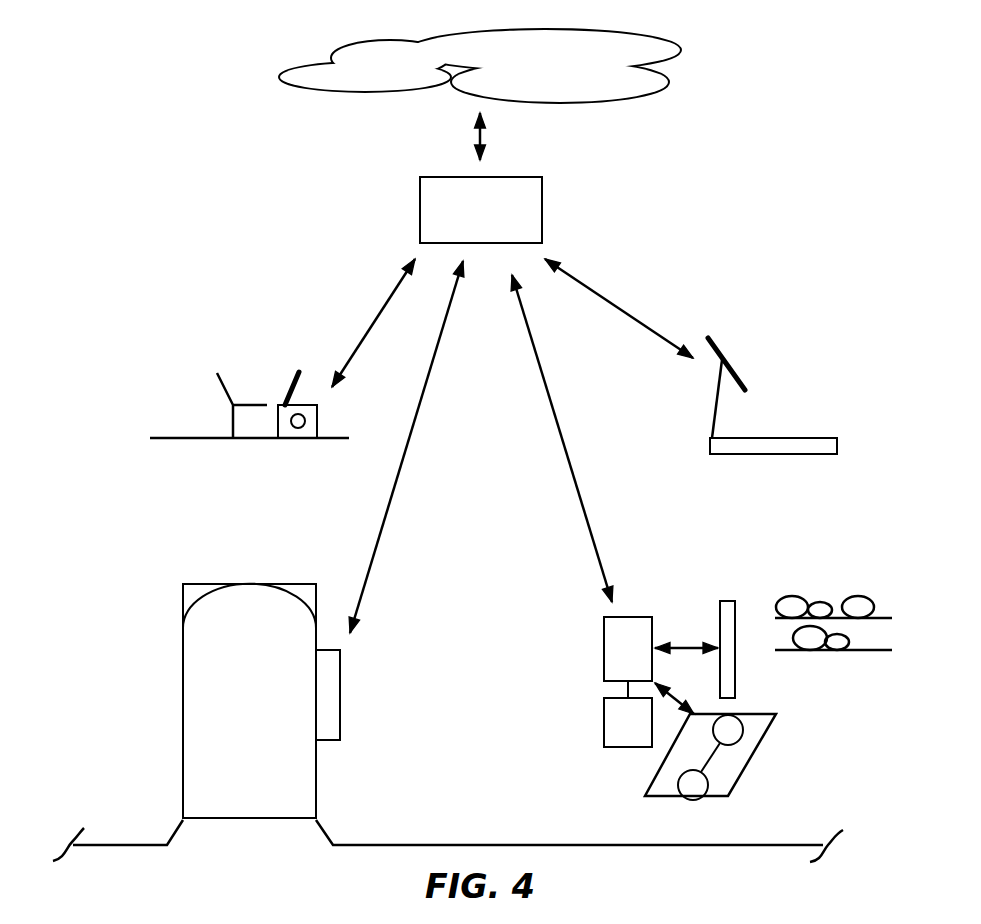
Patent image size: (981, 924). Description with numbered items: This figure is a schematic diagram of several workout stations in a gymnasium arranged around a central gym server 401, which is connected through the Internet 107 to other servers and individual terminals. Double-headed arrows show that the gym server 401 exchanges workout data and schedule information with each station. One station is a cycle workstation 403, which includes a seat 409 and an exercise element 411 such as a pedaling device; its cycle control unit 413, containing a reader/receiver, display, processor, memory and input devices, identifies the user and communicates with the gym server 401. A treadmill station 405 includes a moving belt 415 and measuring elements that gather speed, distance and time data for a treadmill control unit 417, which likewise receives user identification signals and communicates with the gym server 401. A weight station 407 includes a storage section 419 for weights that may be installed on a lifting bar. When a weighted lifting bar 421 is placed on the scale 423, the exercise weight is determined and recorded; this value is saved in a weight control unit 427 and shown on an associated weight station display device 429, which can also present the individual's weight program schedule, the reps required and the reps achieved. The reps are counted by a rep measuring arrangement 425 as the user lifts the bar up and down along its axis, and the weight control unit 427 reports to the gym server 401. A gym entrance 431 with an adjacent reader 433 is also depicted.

The Internet 107 is at (633, 97).
The gym server 401 is at (543, 210).
The cycle workstation 403 is at (251, 365).
The treadmill station 405 is at (775, 381).
The weight station 407 is at (841, 624).
The seat 409 is at (233, 401).
The exercise element 411 is at (318, 421).
The cycle control unit 413 is at (291, 381).
The moving belt 415 is at (838, 436).
The treadmill control unit 417 is at (749, 362).
The storage section 419 is at (837, 653).
The weighted lifting bar 421 is at (745, 733).
The scale 423 is at (736, 766).
The rep measuring arrangement 425 is at (727, 598).
The weight control unit 427 is at (603, 663).
The weight station display device 429 is at (603, 738).
The gym entrance 431 is at (290, 681).
The entrance reader 433 is at (341, 740).